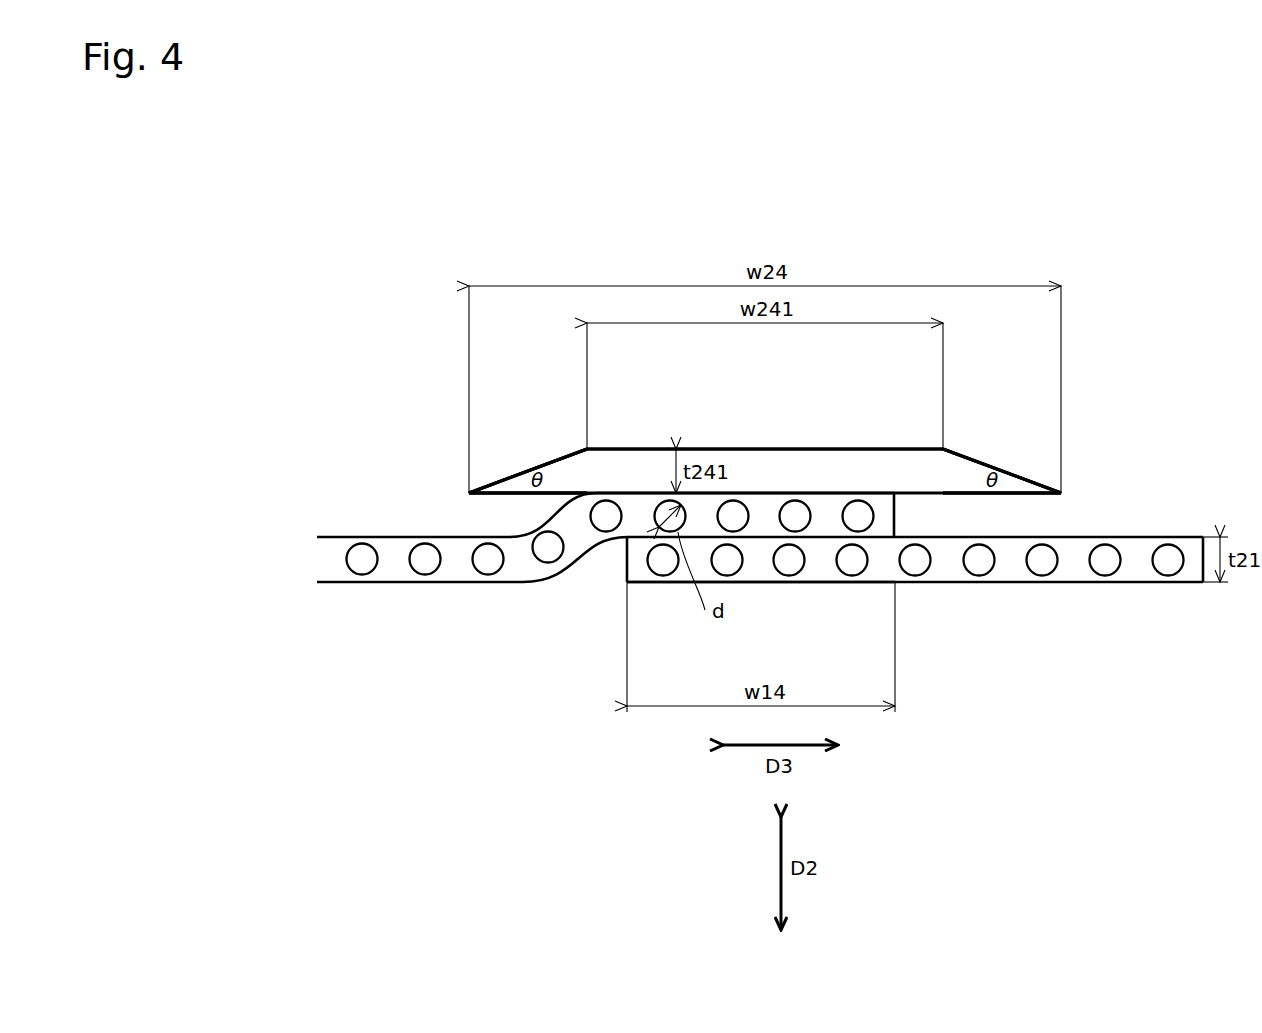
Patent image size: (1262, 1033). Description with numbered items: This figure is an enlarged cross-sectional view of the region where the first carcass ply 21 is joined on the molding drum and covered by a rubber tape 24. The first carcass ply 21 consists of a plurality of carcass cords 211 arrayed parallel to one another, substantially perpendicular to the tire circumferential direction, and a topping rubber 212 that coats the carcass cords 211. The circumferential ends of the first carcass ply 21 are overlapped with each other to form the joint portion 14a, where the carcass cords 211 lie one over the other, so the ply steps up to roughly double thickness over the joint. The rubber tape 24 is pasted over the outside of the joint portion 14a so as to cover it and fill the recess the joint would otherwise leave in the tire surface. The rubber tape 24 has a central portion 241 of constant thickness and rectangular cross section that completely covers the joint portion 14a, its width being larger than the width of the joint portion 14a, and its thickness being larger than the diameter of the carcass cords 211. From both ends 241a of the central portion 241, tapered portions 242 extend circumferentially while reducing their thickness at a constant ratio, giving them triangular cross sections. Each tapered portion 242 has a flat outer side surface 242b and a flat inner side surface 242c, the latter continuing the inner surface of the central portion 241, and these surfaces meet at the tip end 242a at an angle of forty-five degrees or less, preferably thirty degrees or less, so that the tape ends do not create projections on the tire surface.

The joint portion 14a is at (763, 586).
The first carcass ply 21 is at (1074, 586).
The carcass cords 211 is at (421, 568).
The topping rubber 212 is at (457, 571).
The rubber tape 24 is at (827, 437).
The central portion 241 is at (764, 446).
The ends of the central portion 241a is at (587, 449).
The tapered portions 242 is at (542, 466).
The tip ends 242a is at (469, 493).
The outer side surfaces 242b is at (518, 472).
The inner side surfaces 242c is at (517, 493).